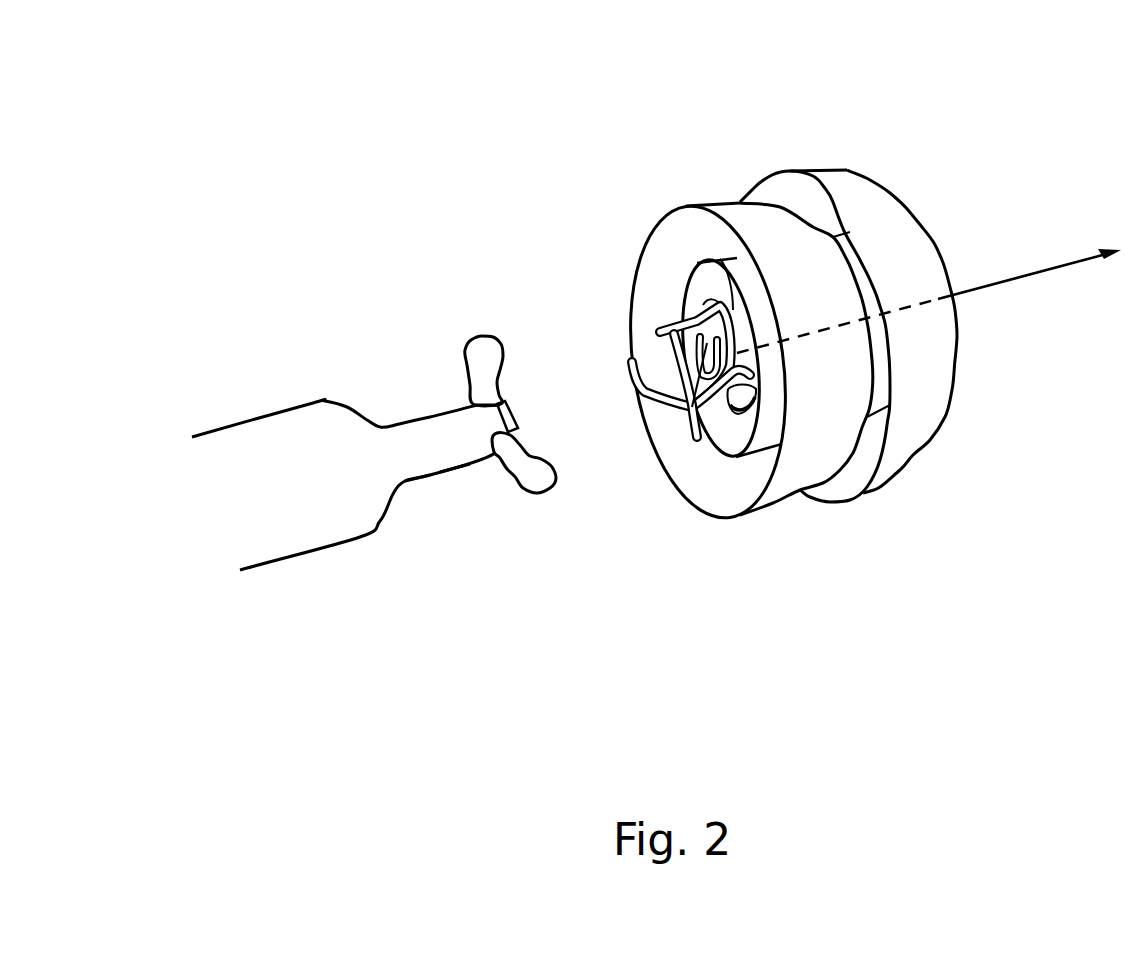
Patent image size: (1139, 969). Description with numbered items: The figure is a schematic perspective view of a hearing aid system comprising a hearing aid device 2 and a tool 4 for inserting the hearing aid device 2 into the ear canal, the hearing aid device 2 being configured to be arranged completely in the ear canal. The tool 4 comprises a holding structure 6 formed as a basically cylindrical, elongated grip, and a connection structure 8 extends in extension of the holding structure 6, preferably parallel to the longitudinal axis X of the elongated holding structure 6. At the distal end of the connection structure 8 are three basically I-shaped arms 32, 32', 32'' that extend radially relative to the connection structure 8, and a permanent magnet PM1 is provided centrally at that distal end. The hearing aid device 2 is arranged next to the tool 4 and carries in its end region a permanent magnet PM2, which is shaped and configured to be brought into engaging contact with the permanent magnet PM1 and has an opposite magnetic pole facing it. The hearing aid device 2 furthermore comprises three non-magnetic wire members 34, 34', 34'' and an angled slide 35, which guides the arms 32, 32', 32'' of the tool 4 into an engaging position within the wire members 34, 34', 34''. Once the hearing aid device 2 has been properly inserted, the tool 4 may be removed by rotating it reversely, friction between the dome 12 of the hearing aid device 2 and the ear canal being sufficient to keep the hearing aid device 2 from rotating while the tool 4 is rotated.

The hearing aid device 2 is at (833, 307).
The tool 4 is at (257, 413).
The holding structure 6 is at (312, 528).
The connection structure 8 is at (460, 447).
The dome 12 is at (915, 410).
The arm 32 is at (544, 510).
The arm 32' is at (471, 330).
The arm 32'' is at (430, 527).
The non-magnetic wire member 34 is at (654, 311).
The non-magnetic wire member 34' is at (647, 339).
The non-magnetic wire member 34'' is at (663, 442).
The angled slide 35 is at (708, 320).
The permanent magnet PM1 is at (506, 420).
The permanent magnet PM2 is at (707, 343).
The longitudinal axis X is at (998, 282).